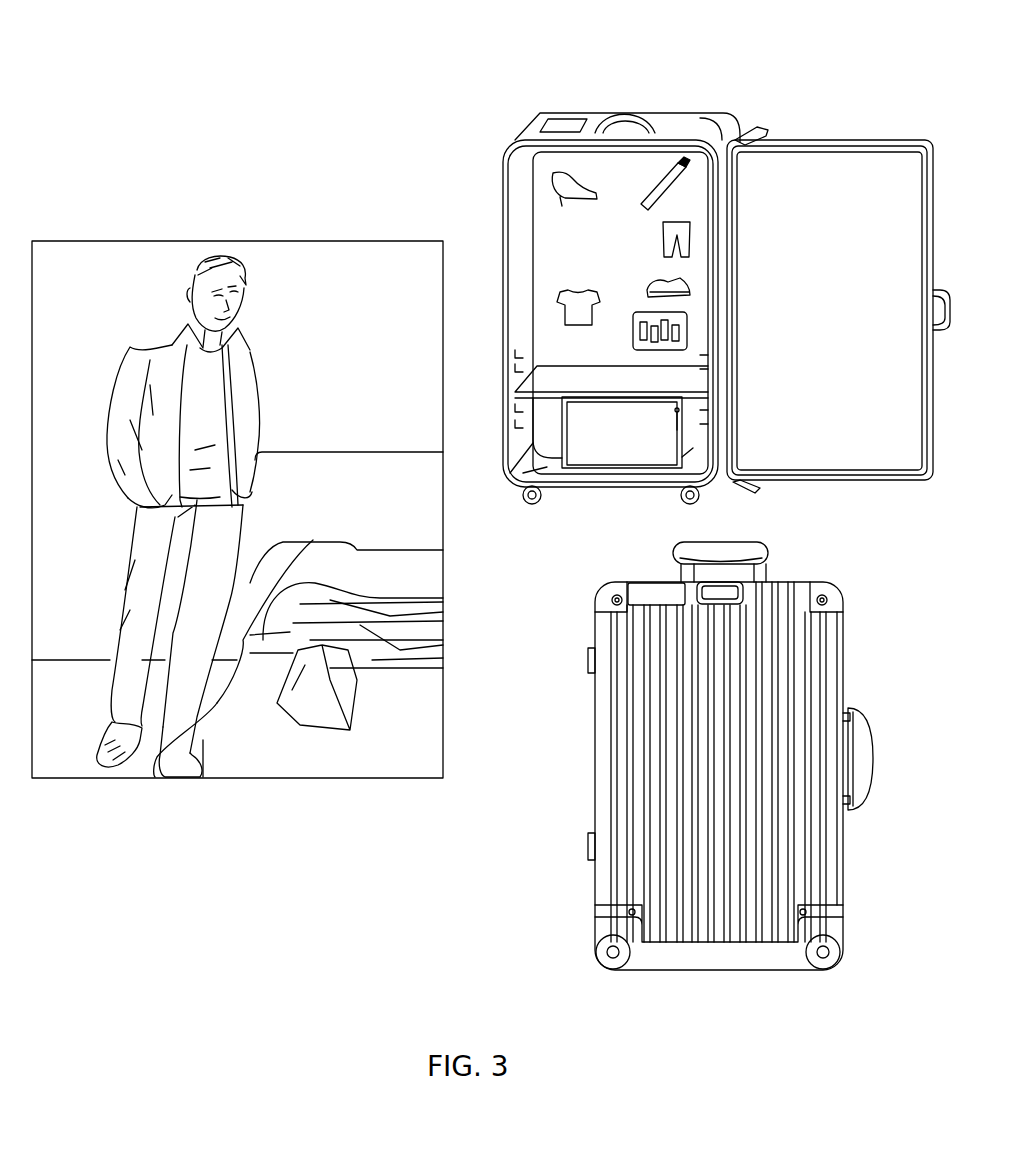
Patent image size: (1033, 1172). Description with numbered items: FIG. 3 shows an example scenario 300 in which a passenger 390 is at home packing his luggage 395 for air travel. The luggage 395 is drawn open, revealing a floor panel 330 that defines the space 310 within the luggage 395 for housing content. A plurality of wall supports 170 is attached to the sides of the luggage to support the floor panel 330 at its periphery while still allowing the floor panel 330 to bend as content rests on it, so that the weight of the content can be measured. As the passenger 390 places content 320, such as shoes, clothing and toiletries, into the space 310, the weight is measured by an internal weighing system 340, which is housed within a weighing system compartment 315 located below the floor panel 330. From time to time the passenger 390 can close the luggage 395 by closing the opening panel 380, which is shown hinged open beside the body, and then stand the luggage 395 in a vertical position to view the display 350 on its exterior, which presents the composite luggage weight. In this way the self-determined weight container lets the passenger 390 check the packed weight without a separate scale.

The scenario 300 is at (237, 428).
The space 310 is at (637, 184).
The weighing system compartment 315 is at (512, 477).
The content 320 is at (565, 201).
The floor panel 330 is at (550, 387).
The internal weighing system 340 is at (562, 433).
The display 350 is at (655, 581).
The opening panel 380 is at (876, 455).
The passenger 390 is at (257, 373).
The luggage 395 is at (862, 97).
The wall supports 170 is at (515, 423).